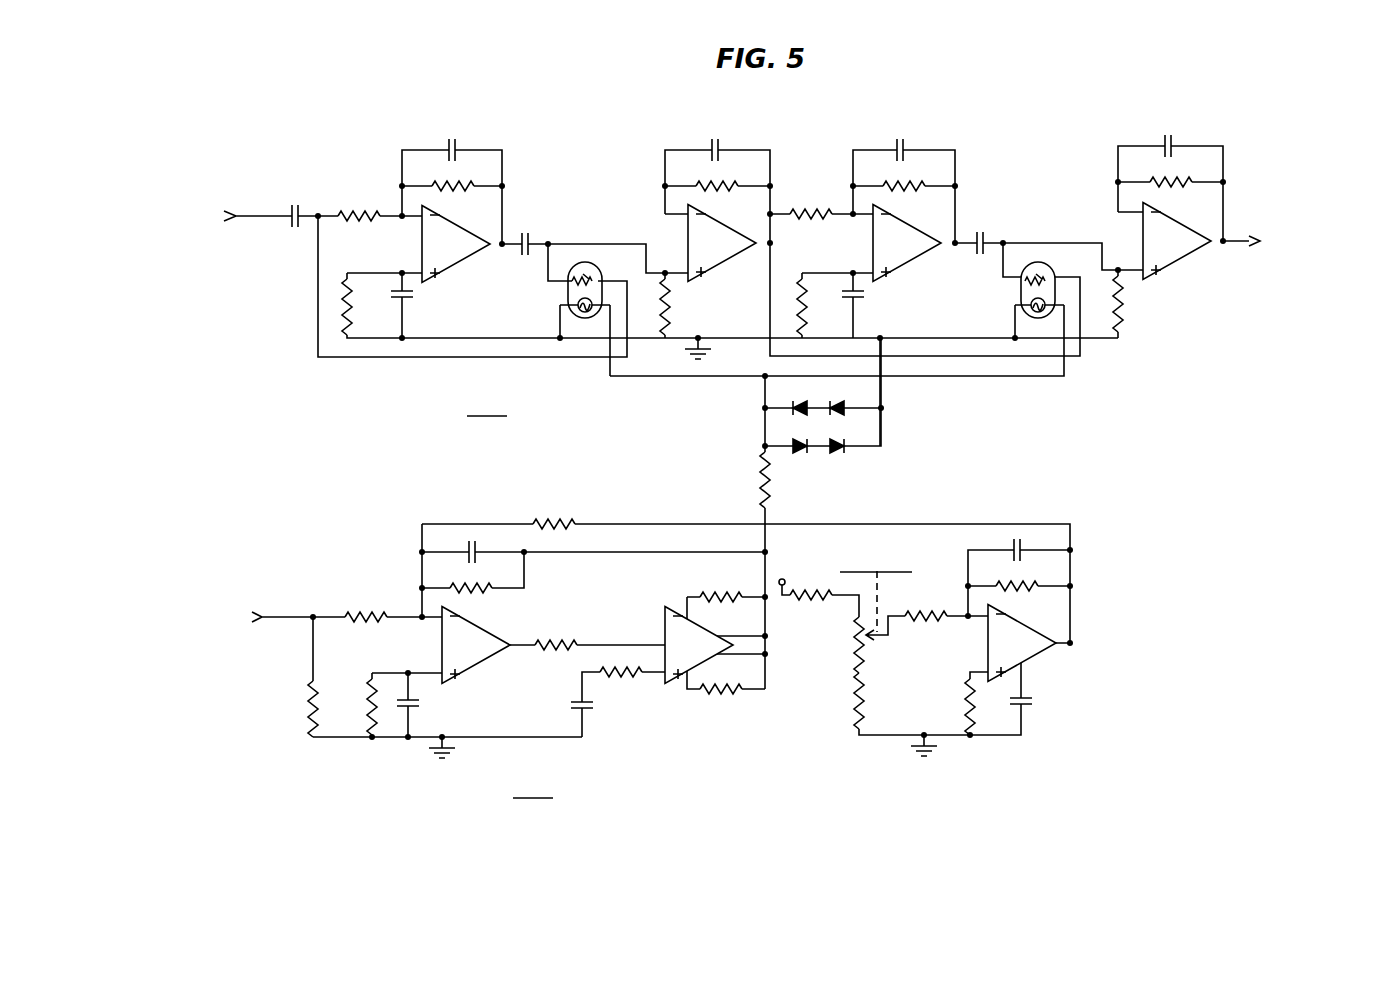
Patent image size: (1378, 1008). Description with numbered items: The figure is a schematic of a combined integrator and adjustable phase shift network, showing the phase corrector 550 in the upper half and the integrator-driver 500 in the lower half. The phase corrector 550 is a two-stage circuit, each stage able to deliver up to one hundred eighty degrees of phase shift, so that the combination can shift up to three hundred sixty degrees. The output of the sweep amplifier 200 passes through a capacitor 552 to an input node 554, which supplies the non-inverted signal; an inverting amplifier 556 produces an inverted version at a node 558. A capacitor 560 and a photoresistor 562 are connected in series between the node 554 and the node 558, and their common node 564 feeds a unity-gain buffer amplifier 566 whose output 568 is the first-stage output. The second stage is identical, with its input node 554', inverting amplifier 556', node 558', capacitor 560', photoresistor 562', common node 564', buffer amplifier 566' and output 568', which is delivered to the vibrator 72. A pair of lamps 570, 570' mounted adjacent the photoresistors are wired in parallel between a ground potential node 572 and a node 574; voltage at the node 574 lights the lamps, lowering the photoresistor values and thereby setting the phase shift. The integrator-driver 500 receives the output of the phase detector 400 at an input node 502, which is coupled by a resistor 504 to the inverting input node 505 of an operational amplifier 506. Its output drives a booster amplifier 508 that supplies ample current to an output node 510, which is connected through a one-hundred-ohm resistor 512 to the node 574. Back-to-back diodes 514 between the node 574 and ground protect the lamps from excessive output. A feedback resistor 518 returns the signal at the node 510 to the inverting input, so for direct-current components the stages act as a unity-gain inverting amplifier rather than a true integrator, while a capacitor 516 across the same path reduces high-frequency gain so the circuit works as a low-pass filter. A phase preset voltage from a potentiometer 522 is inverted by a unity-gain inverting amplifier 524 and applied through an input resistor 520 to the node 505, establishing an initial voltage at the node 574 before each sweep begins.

The phase corrector 550 is at (742, 412).
The capacitor 552 is at (292, 206).
The input node 554 is at (349, 197).
The inverting amplifier 556 is at (456, 262).
The node 558 is at (522, 221).
The capacitor 560 is at (504, 260).
The photoresistor 562 is at (599, 282).
The node 564 is at (567, 230).
The unity-gain buffer amplifier 566 is at (722, 258).
The output 568 is at (808, 188).
The lamps 570 is at (583, 337).
The input node 554' is at (799, 239).
The inverting amplifier 556' is at (908, 261).
The node 558' is at (980, 217).
The capacitor 560' is at (965, 259).
The photoresistor 562' is at (1055, 282).
The node 564' is at (1038, 223).
The unity-gain buffer amplifier 566' is at (1177, 258).
The output 568' is at (1238, 262).
The lamp 570' is at (1038, 319).
The ground potential node 572 is at (1100, 340).
The node 574 is at (762, 408).
The diodes 514 is at (805, 411).
The resistor 512 is at (760, 480).
The integrator-driver 500 is at (662, 661).
The input node 502 is at (313, 615).
The resistor 504 is at (380, 627).
The inverting input node 505 is at (420, 556).
The operational amplifier 506 is at (470, 629).
The booster amplifier 508 is at (660, 624).
The output node 510 is at (767, 553).
The capacitor 516 is at (476, 550).
The feedback resistor 518 is at (470, 586).
The input resistor 520 is at (549, 522).
The potentiometer 522 is at (877, 640).
The unity-gain inverting amplifier 524 is at (970, 645).
The sweep amplifier 200 is at (160, 217).
The phase detector 400 is at (178, 615).
The vibrator 72 is at (1315, 241).